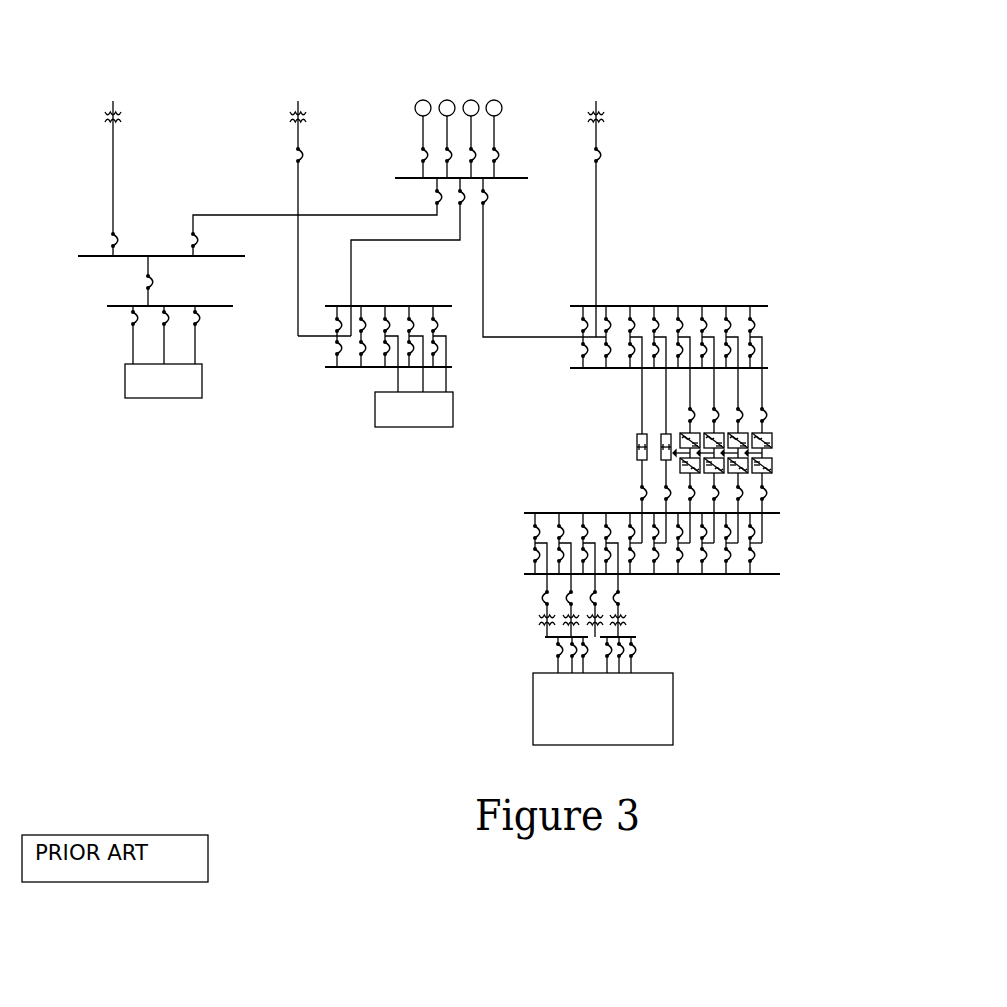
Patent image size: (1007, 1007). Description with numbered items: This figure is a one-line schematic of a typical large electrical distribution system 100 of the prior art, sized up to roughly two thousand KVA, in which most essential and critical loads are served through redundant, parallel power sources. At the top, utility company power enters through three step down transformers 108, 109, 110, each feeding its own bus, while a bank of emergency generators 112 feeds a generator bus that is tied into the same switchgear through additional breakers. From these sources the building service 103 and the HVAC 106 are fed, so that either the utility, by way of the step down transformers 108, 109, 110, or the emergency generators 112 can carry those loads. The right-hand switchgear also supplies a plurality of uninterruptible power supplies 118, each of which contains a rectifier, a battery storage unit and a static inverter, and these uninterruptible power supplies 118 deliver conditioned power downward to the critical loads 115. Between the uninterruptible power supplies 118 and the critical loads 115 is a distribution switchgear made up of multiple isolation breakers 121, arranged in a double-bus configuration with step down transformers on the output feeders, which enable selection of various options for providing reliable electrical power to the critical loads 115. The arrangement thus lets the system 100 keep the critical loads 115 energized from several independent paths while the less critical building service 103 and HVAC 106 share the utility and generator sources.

The distribution system 100 is at (461, 379).
The building service 103 is at (137, 387).
The HVAC 106 is at (390, 418).
The step down transformer 108 is at (122, 115).
The step down transformer 109 is at (310, 116).
The step down transformer 110 is at (612, 118).
The emergency generators 112 is at (483, 67).
The critical loads 115 is at (660, 702).
The uninterruptible power supplies 118 is at (729, 424).
The isolation breakers 121 is at (520, 537).